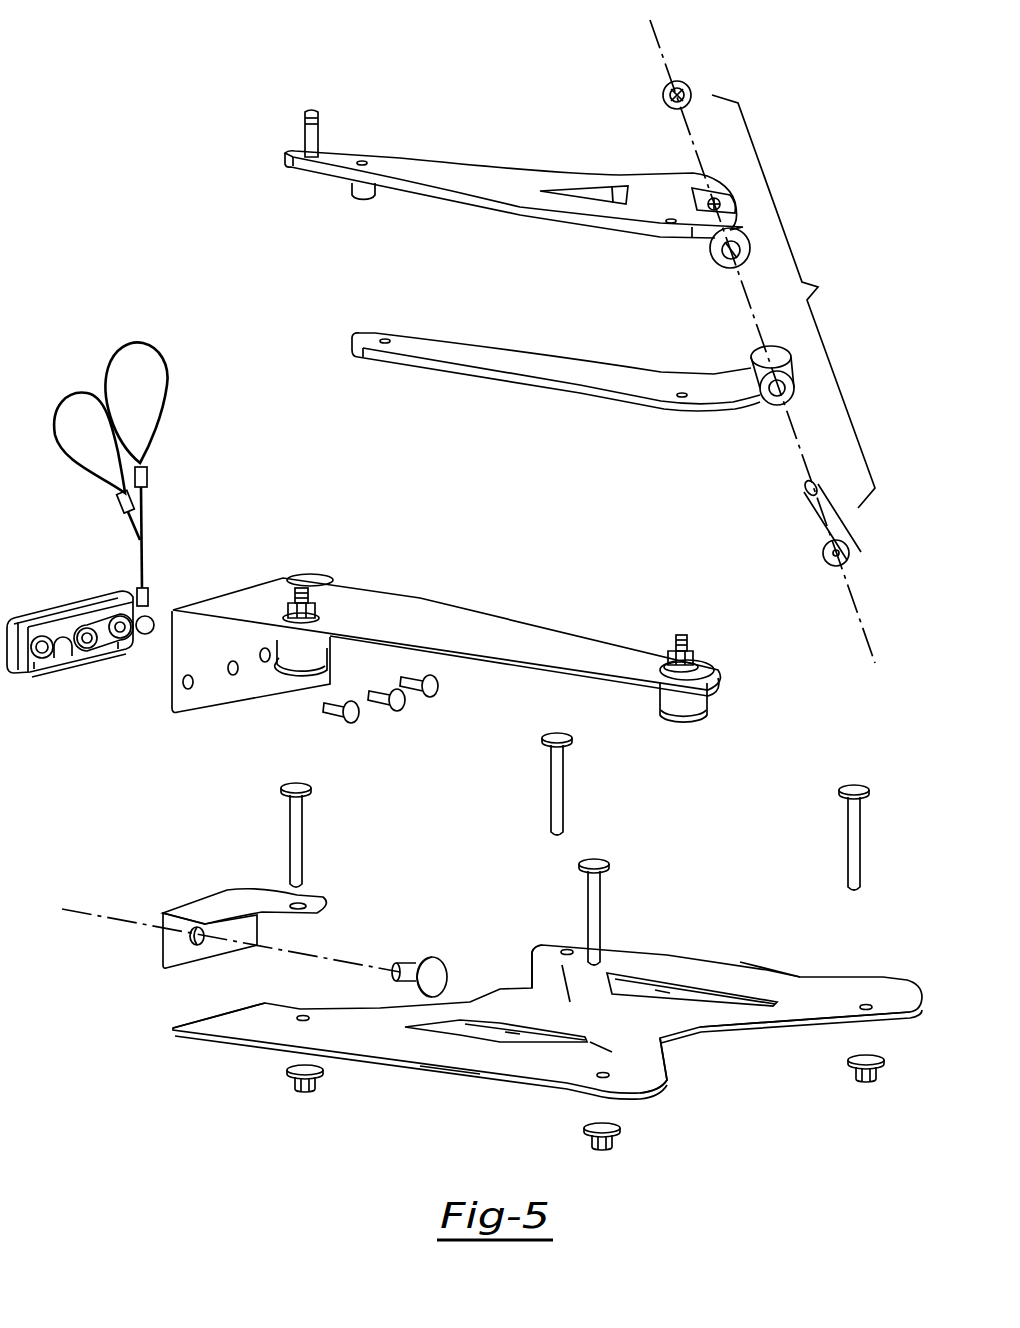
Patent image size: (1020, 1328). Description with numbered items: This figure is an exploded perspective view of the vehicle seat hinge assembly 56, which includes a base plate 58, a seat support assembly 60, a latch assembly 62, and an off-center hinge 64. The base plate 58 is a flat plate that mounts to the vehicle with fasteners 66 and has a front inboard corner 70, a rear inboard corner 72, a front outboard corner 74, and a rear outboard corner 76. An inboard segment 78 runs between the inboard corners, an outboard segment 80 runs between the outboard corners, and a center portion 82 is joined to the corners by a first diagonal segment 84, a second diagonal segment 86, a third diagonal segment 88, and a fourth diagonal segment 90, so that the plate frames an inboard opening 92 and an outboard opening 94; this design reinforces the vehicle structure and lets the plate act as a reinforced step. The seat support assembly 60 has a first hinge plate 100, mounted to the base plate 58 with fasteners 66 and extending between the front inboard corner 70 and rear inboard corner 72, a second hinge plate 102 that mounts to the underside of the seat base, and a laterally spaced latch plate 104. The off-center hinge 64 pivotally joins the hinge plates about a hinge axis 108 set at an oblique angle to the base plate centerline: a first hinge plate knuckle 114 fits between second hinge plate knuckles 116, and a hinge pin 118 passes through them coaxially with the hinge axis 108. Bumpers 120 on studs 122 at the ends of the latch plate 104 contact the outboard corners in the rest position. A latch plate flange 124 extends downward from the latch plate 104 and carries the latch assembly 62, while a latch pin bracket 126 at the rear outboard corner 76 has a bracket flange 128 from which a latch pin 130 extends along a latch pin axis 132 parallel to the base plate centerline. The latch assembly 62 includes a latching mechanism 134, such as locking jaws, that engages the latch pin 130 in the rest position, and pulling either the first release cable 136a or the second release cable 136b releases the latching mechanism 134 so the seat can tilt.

The vehicle seat hinge assembly 56 is at (131, 238).
The base plate 58 is at (699, 1040).
The seat support assembly 60 is at (299, 220).
The latch assembly 62 is at (53, 598).
The off-center hinge 64 is at (793, 301).
The fasteners 66 is at (311, 108).
The front inboard corner 70 is at (900, 979).
The rear inboard corner 72 is at (536, 950).
The front outboard corner 74 is at (637, 1071).
The rear outboard corner 76 is at (224, 1027).
The inboard segment 78 is at (749, 977).
The outboard segment 80 is at (480, 1058).
The center portion 82 is at (570, 1002).
The first diagonal segment 84 is at (751, 1018).
The second diagonal segment 86 is at (596, 980).
The third diagonal segment 88 is at (619, 1053).
The fourth diagonal segment 90 is at (455, 1016).
The inboard opening 92 is at (674, 995).
The outboard opening 94 is at (522, 1037).
The first hinge plate 100 is at (541, 365).
The second hinge plate 102 is at (443, 167).
The latch plate 104 is at (483, 624).
The hinge axis 108 is at (660, 50).
The first hinge plate knuckle 114 is at (771, 353).
The second hinge plate knuckles 116 is at (745, 226).
The hinge pin 118 is at (812, 500).
The bumpers 120 is at (308, 656).
The studs 122 is at (303, 577).
The latch plate flange 124 is at (210, 676).
The latch pin bracket 126 is at (228, 905).
The bracket flange 128 is at (180, 948).
The latch pin 130 is at (409, 962).
The latch pin axis 132 is at (114, 914).
The latching mechanism 134 is at (62, 662).
The first release cable 136a is at (170, 382).
The second release cable 136b is at (57, 420).